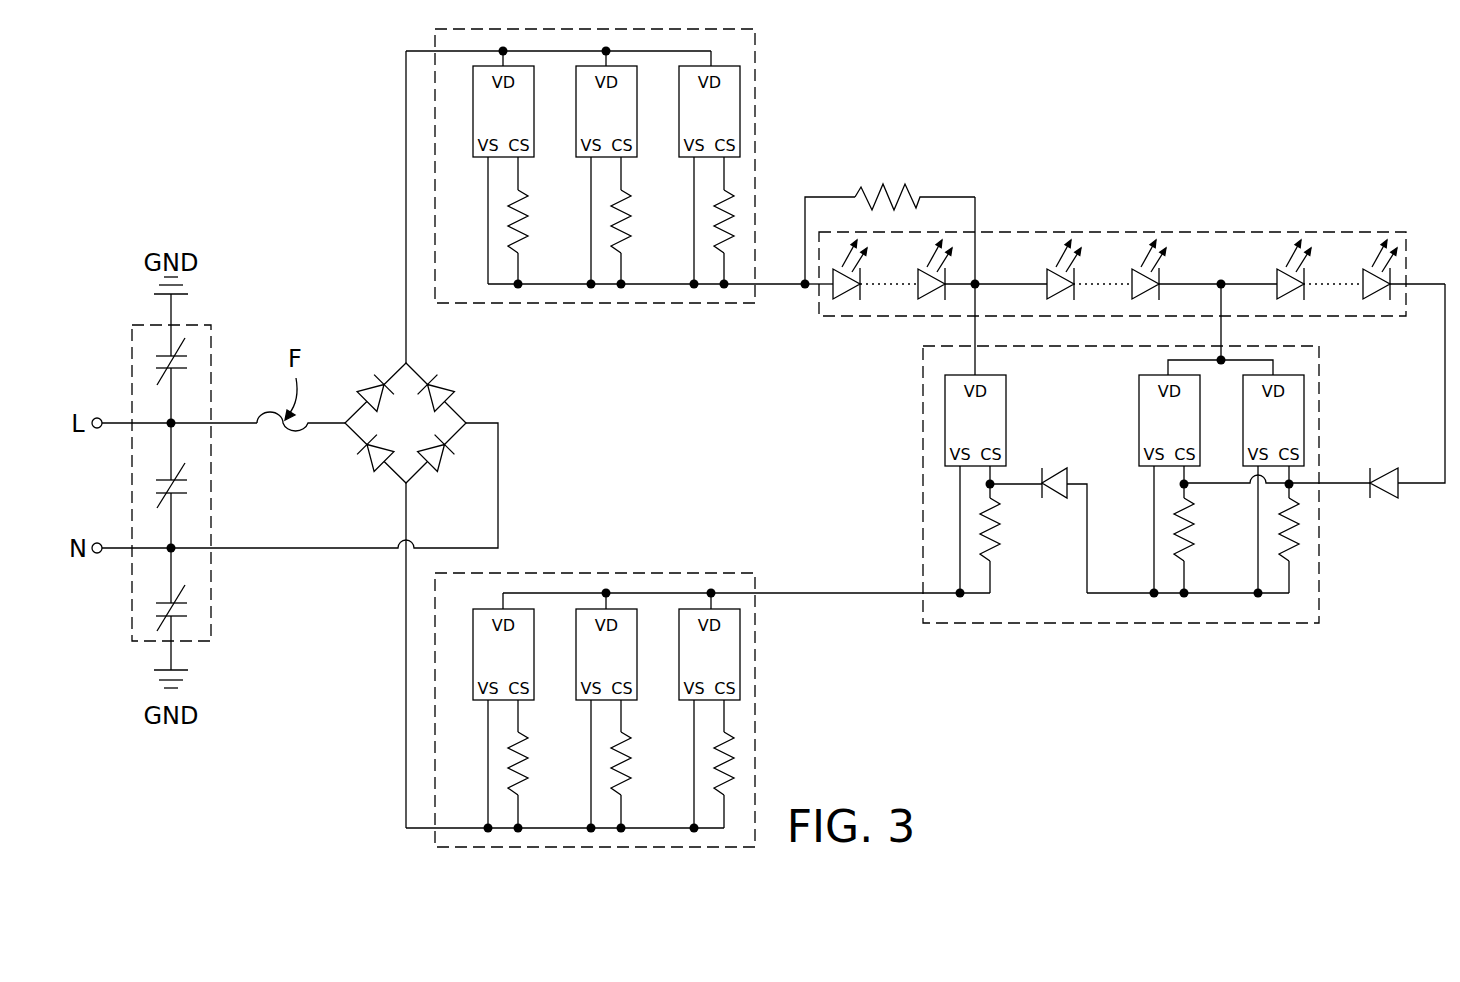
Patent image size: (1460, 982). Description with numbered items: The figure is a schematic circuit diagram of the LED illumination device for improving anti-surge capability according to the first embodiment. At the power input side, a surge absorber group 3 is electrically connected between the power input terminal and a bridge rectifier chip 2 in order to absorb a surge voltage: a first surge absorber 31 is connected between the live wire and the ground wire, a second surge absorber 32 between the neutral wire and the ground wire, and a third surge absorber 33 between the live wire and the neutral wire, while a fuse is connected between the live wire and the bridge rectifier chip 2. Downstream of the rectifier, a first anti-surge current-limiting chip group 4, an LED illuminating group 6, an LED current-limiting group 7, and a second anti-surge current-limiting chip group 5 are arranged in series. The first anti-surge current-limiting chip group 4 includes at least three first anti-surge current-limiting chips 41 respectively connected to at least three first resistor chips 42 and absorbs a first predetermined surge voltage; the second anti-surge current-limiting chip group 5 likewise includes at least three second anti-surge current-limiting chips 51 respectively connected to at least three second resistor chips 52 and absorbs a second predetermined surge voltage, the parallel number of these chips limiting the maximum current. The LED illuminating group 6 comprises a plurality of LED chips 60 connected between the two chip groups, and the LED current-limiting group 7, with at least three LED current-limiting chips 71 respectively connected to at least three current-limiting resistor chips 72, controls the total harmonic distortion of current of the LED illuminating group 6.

The bridge rectifier chip 2 is at (451, 379).
The surge absorber group 3 is at (213, 375).
The first surge absorber 31 is at (160, 352).
The second surge absorber 32 is at (160, 475).
The third surge absorber 33 is at (160, 600).
The first anti-surge current-limiting chip group 4 is at (757, 98).
The first anti-surge current-limiting chip 41 is at (473, 125).
The first resistor chip 42 is at (526, 215).
The second anti-surge current-limiting chip group 5 is at (757, 656).
The second anti-surge current-limiting chip 51 is at (473, 668).
The second resistor chip 52 is at (526, 760).
The LED illuminating group 6 is at (1193, 232).
The LED chip 60 is at (840, 296).
The LED current-limiting group 7 is at (921, 413).
The LED current-limiting chip 71 is at (1006, 403).
The current-limiting resistor chip 72 is at (999, 522).